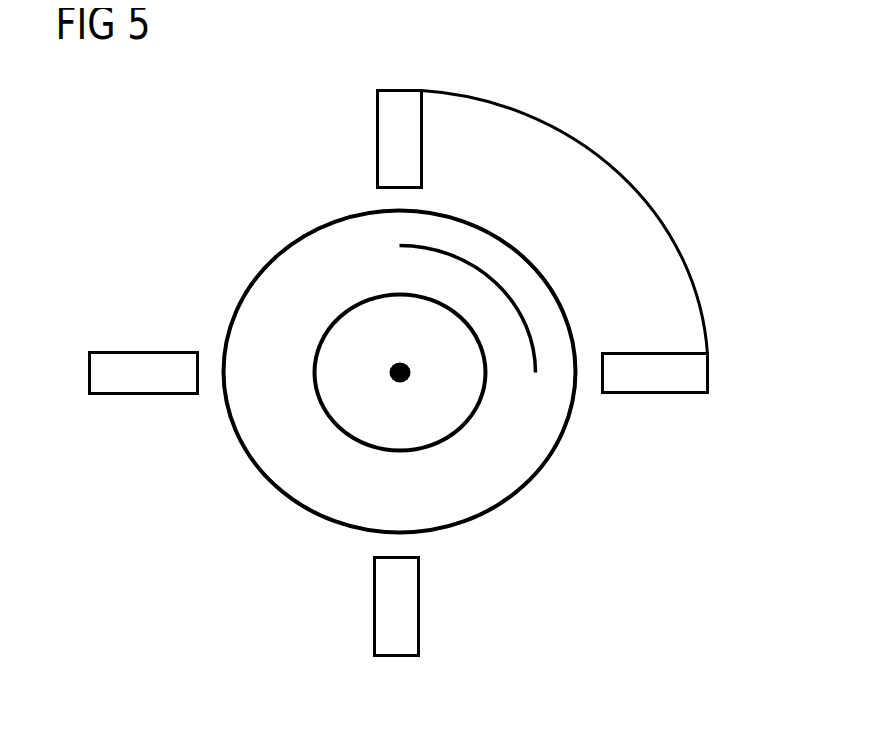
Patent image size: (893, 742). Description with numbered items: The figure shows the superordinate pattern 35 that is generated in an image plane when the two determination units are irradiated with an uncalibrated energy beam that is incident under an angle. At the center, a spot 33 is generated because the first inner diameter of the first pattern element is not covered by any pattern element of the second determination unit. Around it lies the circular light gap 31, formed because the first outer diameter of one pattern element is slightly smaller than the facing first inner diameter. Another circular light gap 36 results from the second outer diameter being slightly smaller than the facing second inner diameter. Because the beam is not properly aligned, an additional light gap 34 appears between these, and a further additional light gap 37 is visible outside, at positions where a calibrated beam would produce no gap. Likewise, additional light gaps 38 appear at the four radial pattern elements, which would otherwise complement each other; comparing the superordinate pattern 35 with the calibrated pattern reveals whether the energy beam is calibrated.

The light gap 31 is at (360, 440).
The spot 33 is at (388, 362).
The light gap 34 is at (485, 272).
The superordinate pattern 35 is at (657, 570).
The light gap 36 is at (247, 455).
The light gap 37 is at (657, 213).
The light gaps 38 is at (375, 133).